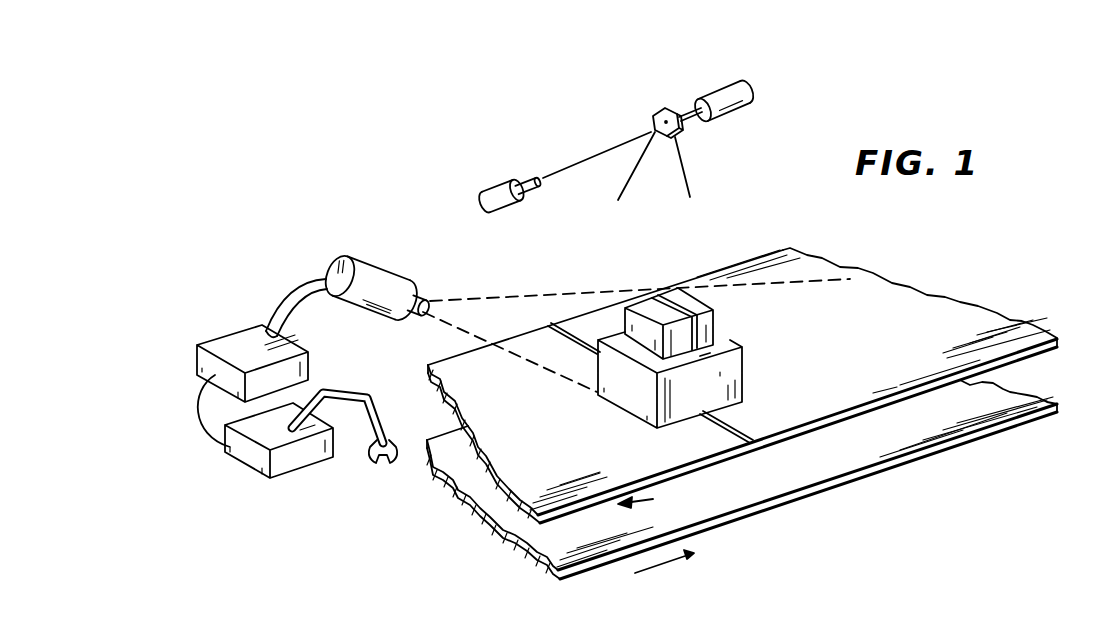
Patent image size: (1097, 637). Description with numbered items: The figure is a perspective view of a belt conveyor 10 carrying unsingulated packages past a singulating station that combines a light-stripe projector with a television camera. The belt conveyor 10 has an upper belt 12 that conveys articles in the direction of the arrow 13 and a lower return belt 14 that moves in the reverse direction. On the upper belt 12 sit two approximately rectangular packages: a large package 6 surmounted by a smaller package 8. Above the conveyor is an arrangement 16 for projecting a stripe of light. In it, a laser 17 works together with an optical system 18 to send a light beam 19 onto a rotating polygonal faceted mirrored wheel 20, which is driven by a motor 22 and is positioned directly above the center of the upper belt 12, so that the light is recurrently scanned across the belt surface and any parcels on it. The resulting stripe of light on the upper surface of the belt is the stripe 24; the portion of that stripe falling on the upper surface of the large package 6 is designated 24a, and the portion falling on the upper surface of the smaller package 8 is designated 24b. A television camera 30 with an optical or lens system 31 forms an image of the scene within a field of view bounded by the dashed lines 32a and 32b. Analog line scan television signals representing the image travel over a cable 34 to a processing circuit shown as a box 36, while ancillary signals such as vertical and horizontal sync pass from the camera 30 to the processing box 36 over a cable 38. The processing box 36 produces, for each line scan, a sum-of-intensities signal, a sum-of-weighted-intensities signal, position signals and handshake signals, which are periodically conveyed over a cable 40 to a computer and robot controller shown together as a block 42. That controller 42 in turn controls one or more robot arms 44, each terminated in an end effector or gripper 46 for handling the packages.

The large package 6 is at (622, 403).
The smaller package 8 is at (714, 330).
The belt conveyor 10 is at (762, 413).
The upper belt 12 is at (1002, 320).
The arrow 13 is at (655, 493).
The lower return belt 14 is at (1023, 407).
The arrangement for projecting a stripe of light 16 is at (623, 70).
The laser 17 is at (487, 191).
The optical system 18 is at (526, 183).
The light beam 19 is at (598, 150).
The rotating polygonal faceted mirrored wheel 20 is at (665, 108).
The motor 22 is at (738, 113).
The stripe of light 24 is at (741, 432).
The portion of light stripe on package 6 24a is at (740, 373).
The portion of light stripe on package 8 24b is at (674, 302).
The television camera 30 is at (367, 262).
The optical or lens system 31 is at (420, 293).
The dashed line 32a is at (558, 294).
The dashed line 32b is at (450, 328).
The cable 34 is at (288, 290).
The processing circuit 36 is at (207, 340).
The cable 38 is at (270, 307).
The cable 40 is at (200, 418).
The computer and robot controller 42 is at (310, 458).
The robot arm 44 is at (348, 392).
The end effector or gripper 46 is at (382, 460).